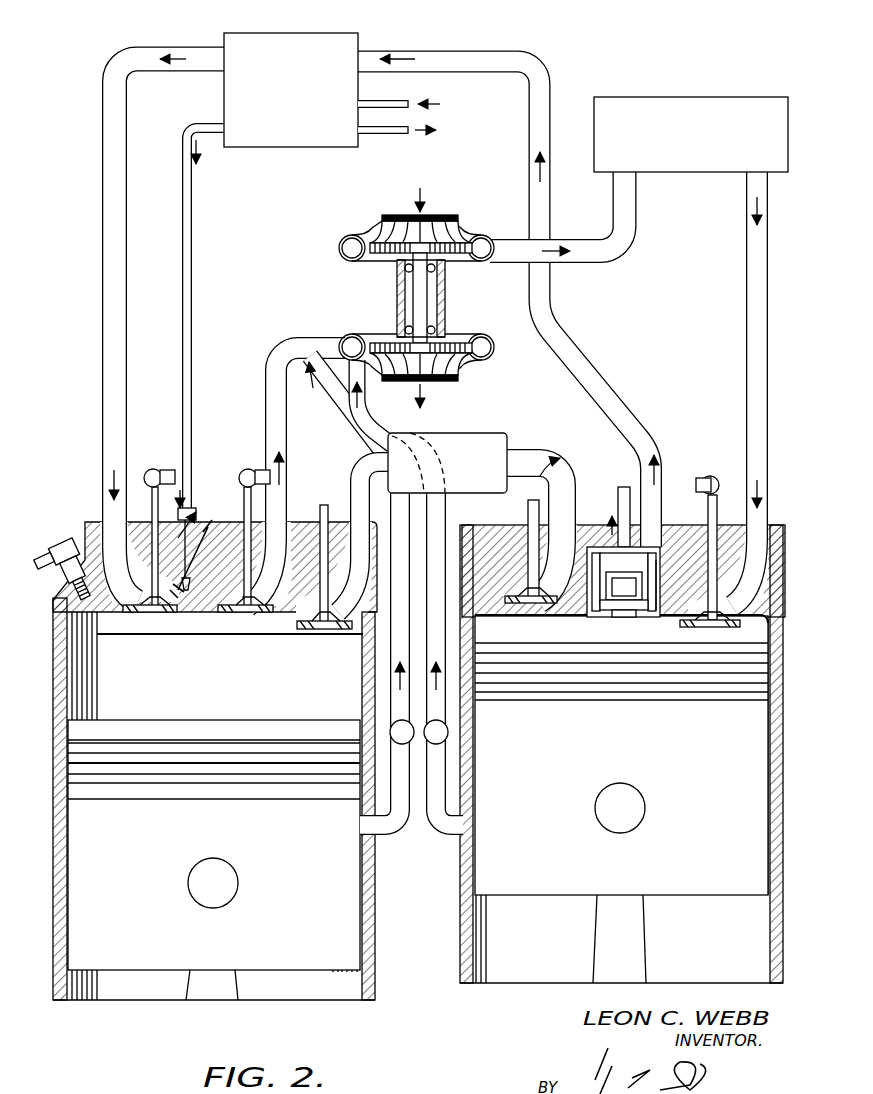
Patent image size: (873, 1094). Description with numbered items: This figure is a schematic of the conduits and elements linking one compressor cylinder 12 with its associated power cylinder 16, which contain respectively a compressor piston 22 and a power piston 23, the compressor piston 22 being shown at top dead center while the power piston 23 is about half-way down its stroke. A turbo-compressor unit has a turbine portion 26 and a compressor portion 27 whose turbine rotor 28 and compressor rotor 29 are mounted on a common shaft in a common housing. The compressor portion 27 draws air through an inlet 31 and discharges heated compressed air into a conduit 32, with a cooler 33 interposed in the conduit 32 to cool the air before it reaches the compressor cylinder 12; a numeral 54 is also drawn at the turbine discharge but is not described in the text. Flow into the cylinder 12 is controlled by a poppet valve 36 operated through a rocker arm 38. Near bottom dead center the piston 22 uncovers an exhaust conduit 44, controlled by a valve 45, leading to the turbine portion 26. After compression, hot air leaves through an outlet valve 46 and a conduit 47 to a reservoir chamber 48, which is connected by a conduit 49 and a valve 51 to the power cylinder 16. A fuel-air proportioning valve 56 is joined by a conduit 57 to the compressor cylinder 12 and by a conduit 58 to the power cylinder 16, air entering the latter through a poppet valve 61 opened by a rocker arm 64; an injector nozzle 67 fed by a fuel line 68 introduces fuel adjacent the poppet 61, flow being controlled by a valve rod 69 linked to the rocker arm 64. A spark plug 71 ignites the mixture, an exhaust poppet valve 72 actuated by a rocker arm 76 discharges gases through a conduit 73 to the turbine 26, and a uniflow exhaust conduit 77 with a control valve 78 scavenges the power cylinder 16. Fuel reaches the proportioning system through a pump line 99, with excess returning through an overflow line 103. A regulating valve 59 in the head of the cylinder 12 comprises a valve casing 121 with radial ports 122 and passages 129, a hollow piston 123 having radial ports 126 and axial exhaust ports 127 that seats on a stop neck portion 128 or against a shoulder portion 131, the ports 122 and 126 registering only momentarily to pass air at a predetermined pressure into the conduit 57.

The compressor cylinder 12 is at (461, 922).
The power cylinder 16 is at (372, 980).
The compressor piston 22 is at (528, 894).
The power piston 23 is at (64, 847).
The turbine portion 26 is at (495, 359).
The compressor portion 27 is at (337, 247).
The turbine rotor 28 is at (466, 378).
The compressor rotor 29 is at (455, 230).
The inlet 31 is at (432, 216).
The conduit 32 is at (588, 262).
The cooler 33 is at (682, 165).
The poppet valve 36 is at (702, 606).
The rocker arm 38 is at (714, 476).
The exhaust port or conduit 44 is at (437, 834).
The valve 45 is at (449, 732).
The unloader or outlet valve 46 is at (516, 604).
The conduit 47 is at (572, 468).
The reservoir chamber 48 is at (497, 416).
The conduit 49 is at (349, 483).
The valve 51 is at (318, 626).
The pump outlet 54 is at (434, 378).
The fuel-air proportioning valve 56 is at (312, 36).
The conduit 57 is at (548, 103).
The conduit 58 is at (101, 272).
The regulating valve 59 is at (618, 620).
The poppet valve 61 is at (146, 620).
The rocker arm 64 is at (156, 467).
The injector nozzle 67 is at (190, 612).
The fuel line 68 is at (192, 312).
The valve or piston rod 69 is at (206, 512).
The spark plug 71 is at (58, 566).
The exhaust poppet valve 72 is at (246, 620).
The conduit 73 is at (263, 423).
The rocker arm 76 is at (252, 470).
The uniflow exhaust conduit 77 is at (392, 834).
The control valve 78 is at (382, 727).
The line 99 is at (392, 94).
The return or overflow line 103 is at (390, 140).
The valve casing 121 is at (606, 580).
The radial ports 122 is at (600, 566).
The hollow piston 123 is at (630, 618).
The radial ports 126 is at (638, 584).
The axial exhaust ports 127 is at (596, 558).
The stop neck portion 128 is at (598, 612).
The passages 129 is at (660, 612).
The shoulder portion 131 is at (646, 522).